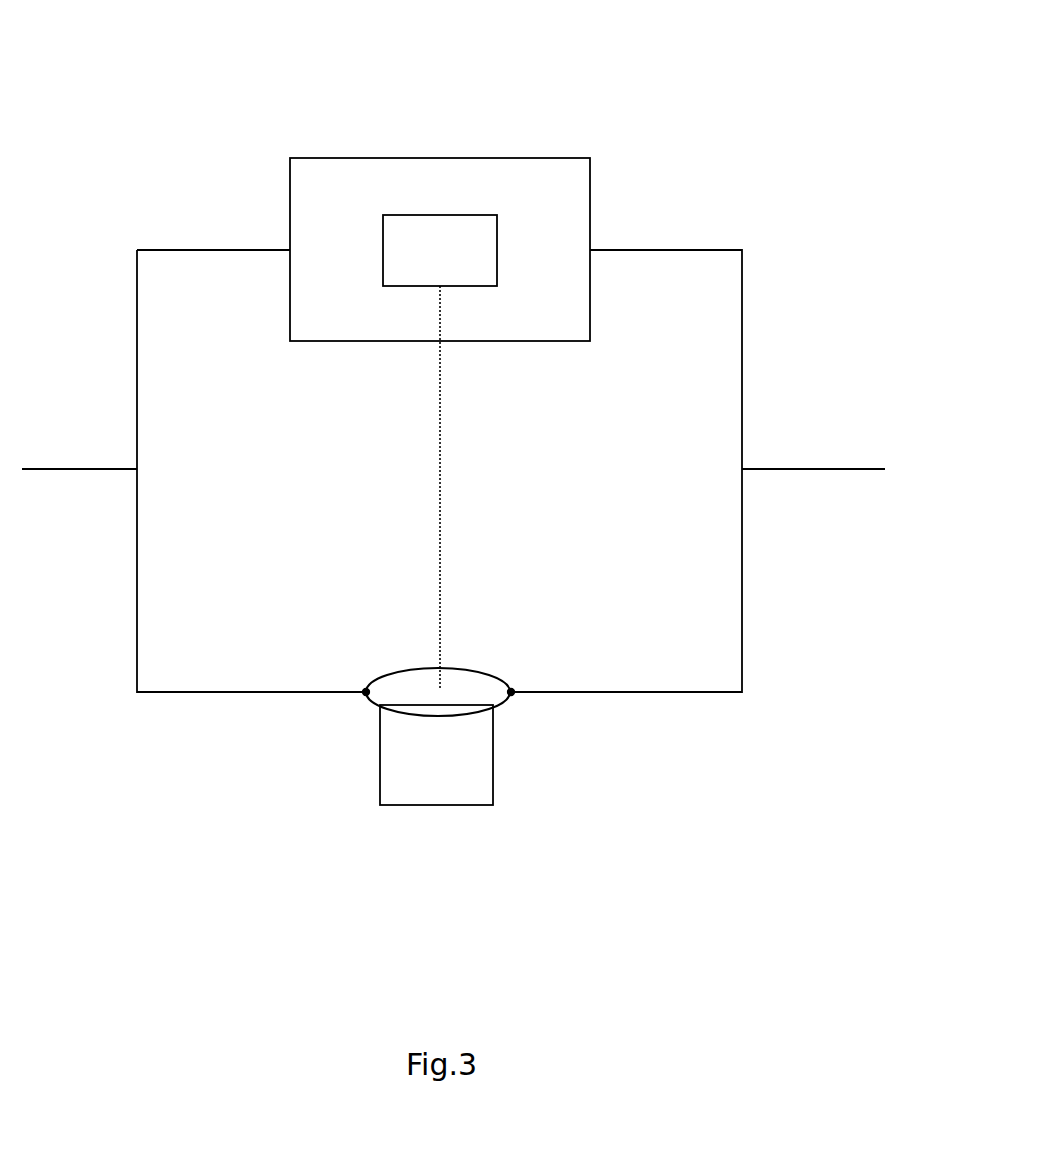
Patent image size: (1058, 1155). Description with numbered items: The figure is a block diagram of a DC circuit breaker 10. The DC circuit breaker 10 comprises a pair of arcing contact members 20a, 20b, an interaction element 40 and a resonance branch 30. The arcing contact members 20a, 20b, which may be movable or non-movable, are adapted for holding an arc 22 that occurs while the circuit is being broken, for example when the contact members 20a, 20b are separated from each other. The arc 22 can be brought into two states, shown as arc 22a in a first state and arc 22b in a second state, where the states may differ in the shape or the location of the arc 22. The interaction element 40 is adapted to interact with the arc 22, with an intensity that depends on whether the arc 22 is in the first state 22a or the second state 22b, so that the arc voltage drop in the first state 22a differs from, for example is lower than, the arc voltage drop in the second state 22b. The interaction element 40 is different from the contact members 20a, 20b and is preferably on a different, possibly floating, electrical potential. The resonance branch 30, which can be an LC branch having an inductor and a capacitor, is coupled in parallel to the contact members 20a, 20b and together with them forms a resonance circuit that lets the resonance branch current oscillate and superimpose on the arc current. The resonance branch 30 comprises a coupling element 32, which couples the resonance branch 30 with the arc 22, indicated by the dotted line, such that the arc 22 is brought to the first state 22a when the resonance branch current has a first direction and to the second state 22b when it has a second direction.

The DC circuit breaker 10 is at (659, 154).
The resonance branch 30 is at (316, 158).
The coupling element 32 is at (470, 287).
The arc 22 is at (402, 630).
The arc in first state 22a is at (413, 667).
The arc in second state 22b is at (422, 713).
The arcing contact member 20a is at (366, 692).
The arcing contact member 20b is at (512, 692).
The interaction element 40 is at (493, 787).